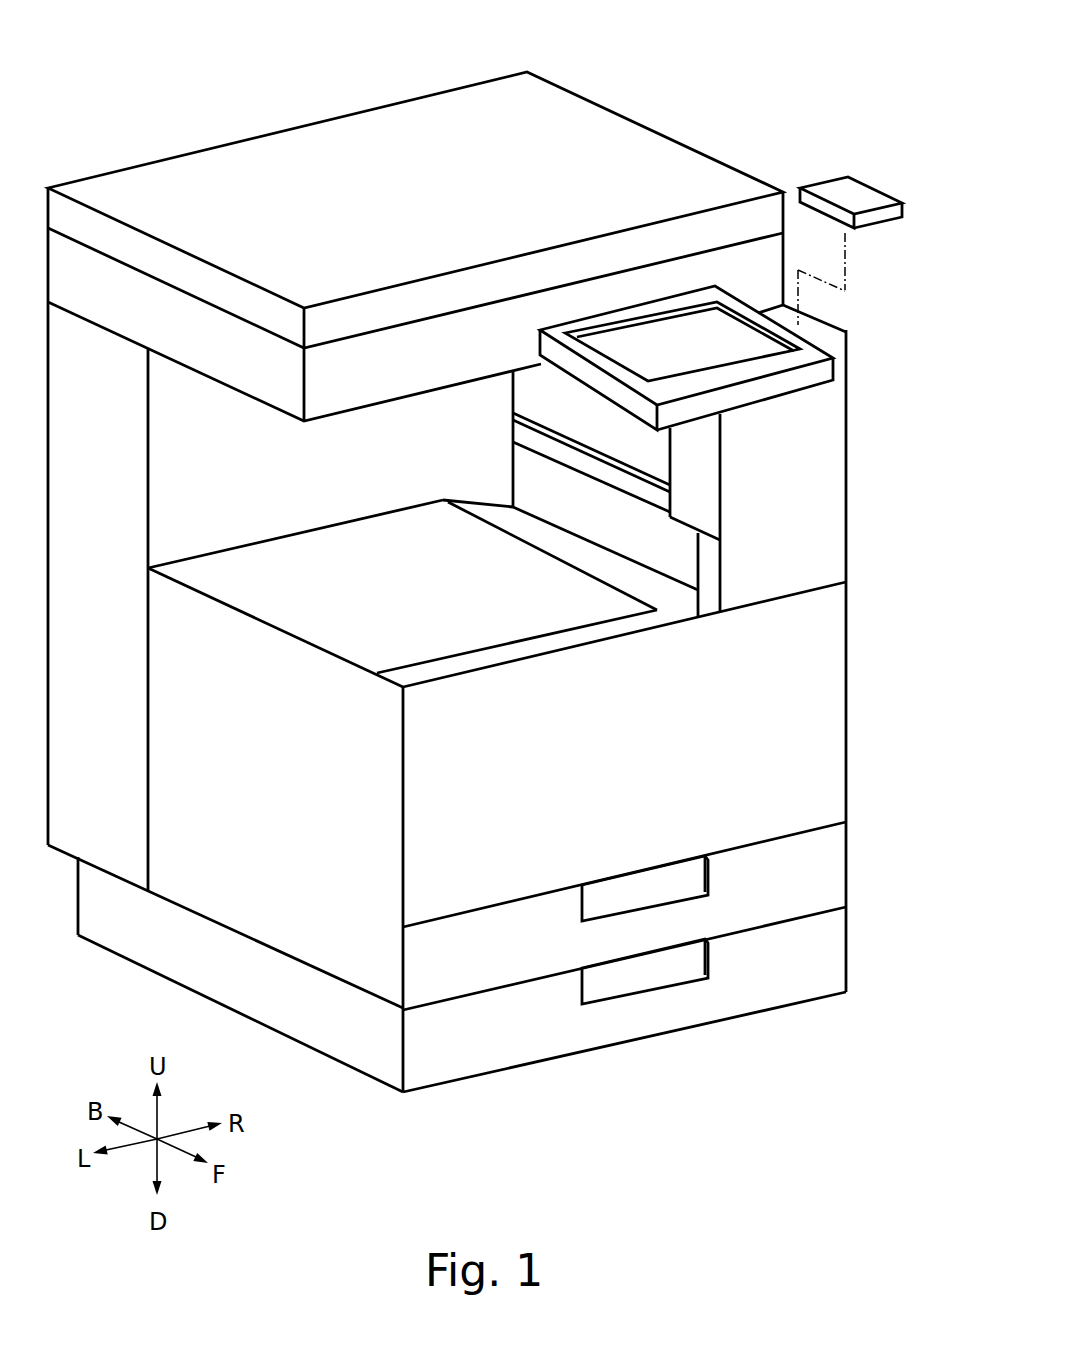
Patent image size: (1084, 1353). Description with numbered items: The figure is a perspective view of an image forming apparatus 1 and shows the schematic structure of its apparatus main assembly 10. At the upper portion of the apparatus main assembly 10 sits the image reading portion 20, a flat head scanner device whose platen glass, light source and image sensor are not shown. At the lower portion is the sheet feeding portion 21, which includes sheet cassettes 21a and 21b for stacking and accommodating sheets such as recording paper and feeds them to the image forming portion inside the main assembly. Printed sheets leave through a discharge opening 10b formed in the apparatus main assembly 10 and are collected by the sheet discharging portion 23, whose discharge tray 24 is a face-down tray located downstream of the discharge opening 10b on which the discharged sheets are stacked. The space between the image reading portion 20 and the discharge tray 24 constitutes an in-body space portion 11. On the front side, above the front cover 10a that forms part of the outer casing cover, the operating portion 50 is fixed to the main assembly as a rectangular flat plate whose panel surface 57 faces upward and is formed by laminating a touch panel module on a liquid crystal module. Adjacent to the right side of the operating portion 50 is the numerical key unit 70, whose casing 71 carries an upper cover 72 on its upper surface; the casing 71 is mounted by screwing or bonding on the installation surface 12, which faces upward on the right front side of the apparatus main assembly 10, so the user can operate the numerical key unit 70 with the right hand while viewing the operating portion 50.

The image forming apparatus 1 is at (271, 88).
The image forming apparatus main assembly 10 is at (507, 640).
The front cover 10a is at (814, 461).
The discharge opening 10b is at (530, 464).
The in-body space portion 11 is at (172, 512).
The installation surface 12 is at (817, 323).
The image reading portion 20 is at (696, 128).
The sheet feeding portion 21 is at (684, 883).
The sheet cassette 21a is at (837, 868).
The sheet cassette 21b is at (837, 960).
The sheet discharging portion 23 is at (423, 578).
The discharge tray 24 is at (403, 537).
The operating portion 50 is at (728, 309).
The panel surface 57 is at (665, 330).
The numerical key unit 70 is at (870, 209).
The casing 71 is at (875, 217).
The upper cover 72 is at (843, 188).